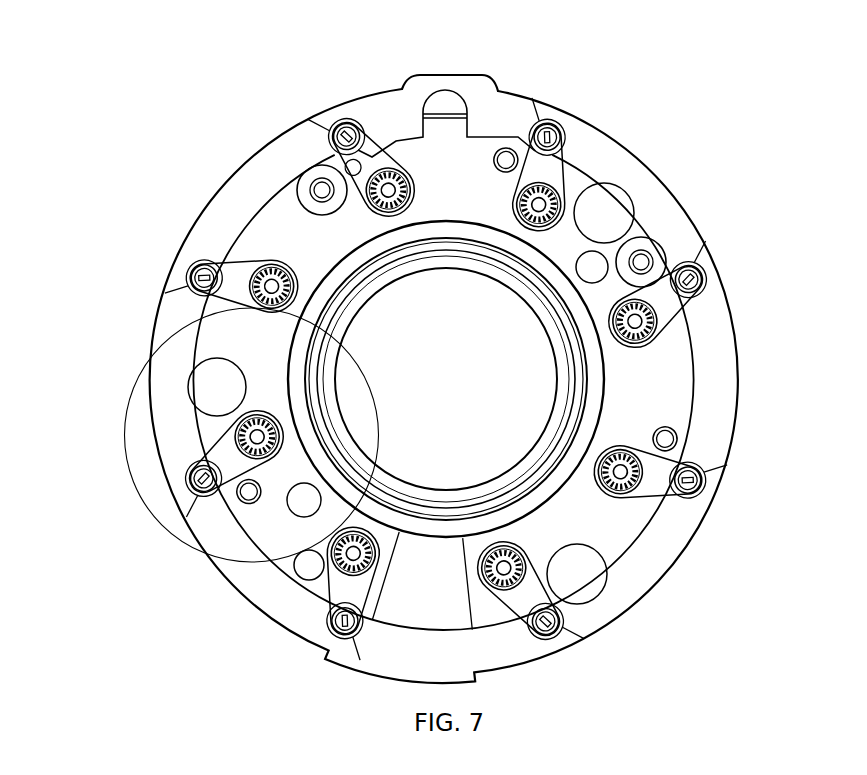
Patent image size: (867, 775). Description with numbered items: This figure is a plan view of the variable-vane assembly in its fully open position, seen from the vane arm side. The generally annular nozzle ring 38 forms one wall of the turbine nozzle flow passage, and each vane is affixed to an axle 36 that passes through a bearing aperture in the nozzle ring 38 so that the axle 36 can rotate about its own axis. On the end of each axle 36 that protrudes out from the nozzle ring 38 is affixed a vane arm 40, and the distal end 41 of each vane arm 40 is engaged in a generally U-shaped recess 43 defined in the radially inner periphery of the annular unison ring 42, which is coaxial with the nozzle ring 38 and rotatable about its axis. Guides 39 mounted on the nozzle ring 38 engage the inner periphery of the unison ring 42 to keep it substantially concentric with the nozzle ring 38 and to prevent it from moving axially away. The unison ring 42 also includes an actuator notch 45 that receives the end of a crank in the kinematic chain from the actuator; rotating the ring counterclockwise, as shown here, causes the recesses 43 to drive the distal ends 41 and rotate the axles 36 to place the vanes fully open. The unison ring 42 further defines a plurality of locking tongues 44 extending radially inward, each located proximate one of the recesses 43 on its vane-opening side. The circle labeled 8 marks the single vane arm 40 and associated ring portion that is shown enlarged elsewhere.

The detail region of FIG. 8 is at (128, 382).
The axle 36 is at (400, 206).
The nozzle ring 38 is at (458, 192).
The guides 39 is at (312, 192).
The vane arm 40 is at (356, 180).
The distal end 41 is at (318, 120).
The unison ring 42 is at (290, 138).
The recess 43 is at (350, 125).
The locking tongue 44 is at (400, 152).
The actuator notch 45 is at (447, 120).